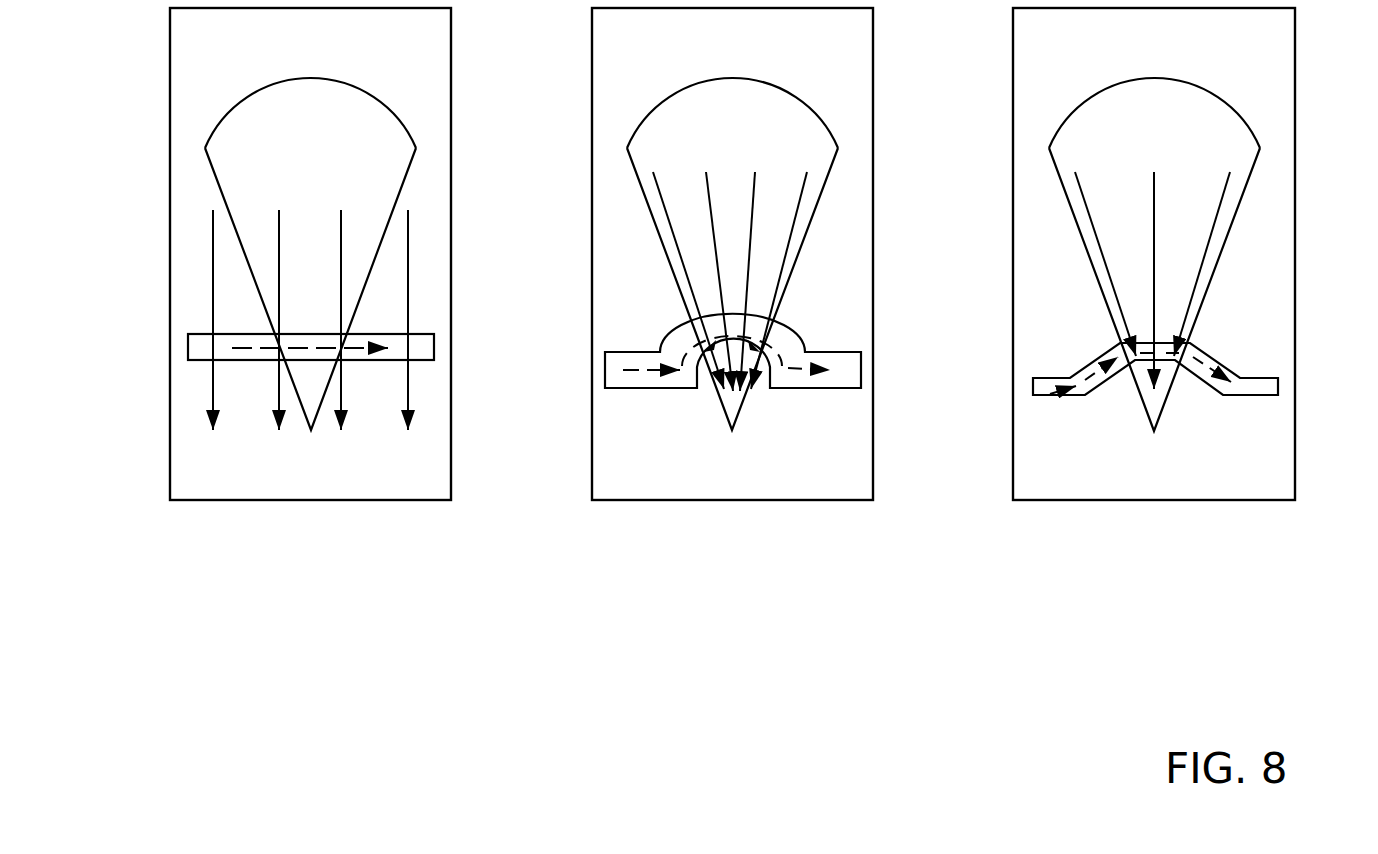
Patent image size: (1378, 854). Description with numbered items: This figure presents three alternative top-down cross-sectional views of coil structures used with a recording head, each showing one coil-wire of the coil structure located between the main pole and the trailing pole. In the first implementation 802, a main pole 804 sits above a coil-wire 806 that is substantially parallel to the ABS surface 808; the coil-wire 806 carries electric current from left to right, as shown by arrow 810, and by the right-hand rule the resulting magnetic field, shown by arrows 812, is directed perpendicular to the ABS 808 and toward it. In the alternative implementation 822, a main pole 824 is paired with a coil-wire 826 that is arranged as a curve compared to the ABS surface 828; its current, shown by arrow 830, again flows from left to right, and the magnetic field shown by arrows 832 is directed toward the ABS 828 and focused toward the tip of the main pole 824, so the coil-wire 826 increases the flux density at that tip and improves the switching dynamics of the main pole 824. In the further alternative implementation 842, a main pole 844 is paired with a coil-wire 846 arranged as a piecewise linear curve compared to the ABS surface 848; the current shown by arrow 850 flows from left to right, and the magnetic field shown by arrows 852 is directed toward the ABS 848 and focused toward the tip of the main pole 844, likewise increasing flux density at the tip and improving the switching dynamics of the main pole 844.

The implementation 802 is at (309, 580).
The main pole 804 is at (205, 148).
The coil-wire 806 is at (188, 350).
The ABS surface 808 is at (362, 502).
The arrow 810 is at (240, 353).
The arrows 812 is at (418, 231).
The alternative implementation 822 is at (731, 580).
The main pole 824 is at (627, 148).
The coil-wire 826 is at (605, 368).
The ABS surface 828 is at (795, 502).
The arrow 830 is at (643, 377).
The arrows 832 is at (779, 203).
The alternative implementation 842 is at (1153, 580).
The main pole 844 is at (1049, 148).
The coil-wire 846 is at (1033, 385).
The ABS surface 848 is at (1208, 502).
The arrow 850 is at (1068, 389).
The arrows 852 is at (1228, 197).